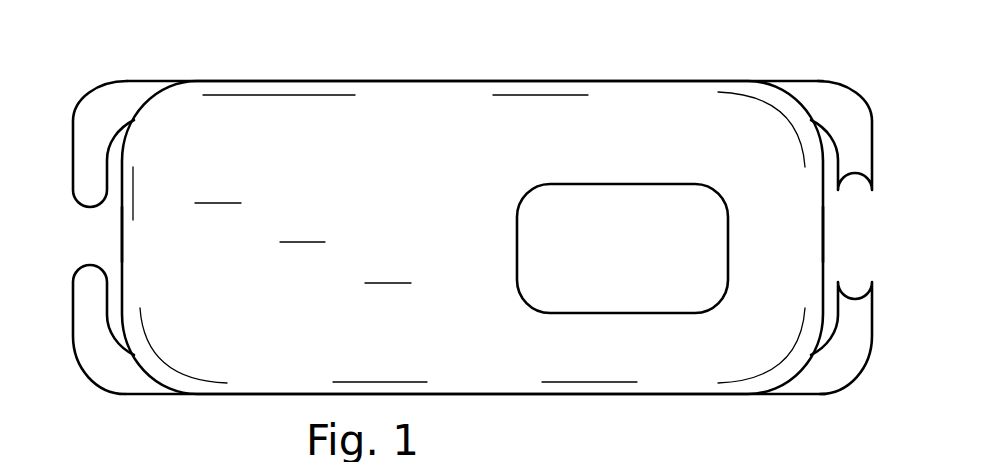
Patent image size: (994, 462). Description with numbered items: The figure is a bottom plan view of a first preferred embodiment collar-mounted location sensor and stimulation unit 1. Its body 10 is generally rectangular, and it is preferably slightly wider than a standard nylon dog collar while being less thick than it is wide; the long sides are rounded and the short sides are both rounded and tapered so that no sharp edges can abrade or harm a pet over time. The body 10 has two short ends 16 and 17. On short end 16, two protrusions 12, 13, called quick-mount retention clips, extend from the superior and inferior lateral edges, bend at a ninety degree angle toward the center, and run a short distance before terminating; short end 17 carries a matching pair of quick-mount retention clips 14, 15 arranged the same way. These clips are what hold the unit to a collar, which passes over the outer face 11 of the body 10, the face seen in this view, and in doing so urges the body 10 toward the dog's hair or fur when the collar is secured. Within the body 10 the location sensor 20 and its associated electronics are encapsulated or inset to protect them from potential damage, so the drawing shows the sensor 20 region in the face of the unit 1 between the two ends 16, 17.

The collar-mounted location sensor and stimulation unit 1 is at (207, 48).
The body 10 is at (548, 80).
The outer face 11 is at (411, 200).
The quick-mount retention clip 12 is at (853, 123).
The quick-mount retention clip 13 is at (860, 320).
The quick-mount retention clip 14 is at (85, 138).
The quick-mount retention clip 15 is at (85, 318).
The short end 16 is at (824, 233).
The short end 17 is at (120, 233).
The location sensor 20 is at (643, 257).